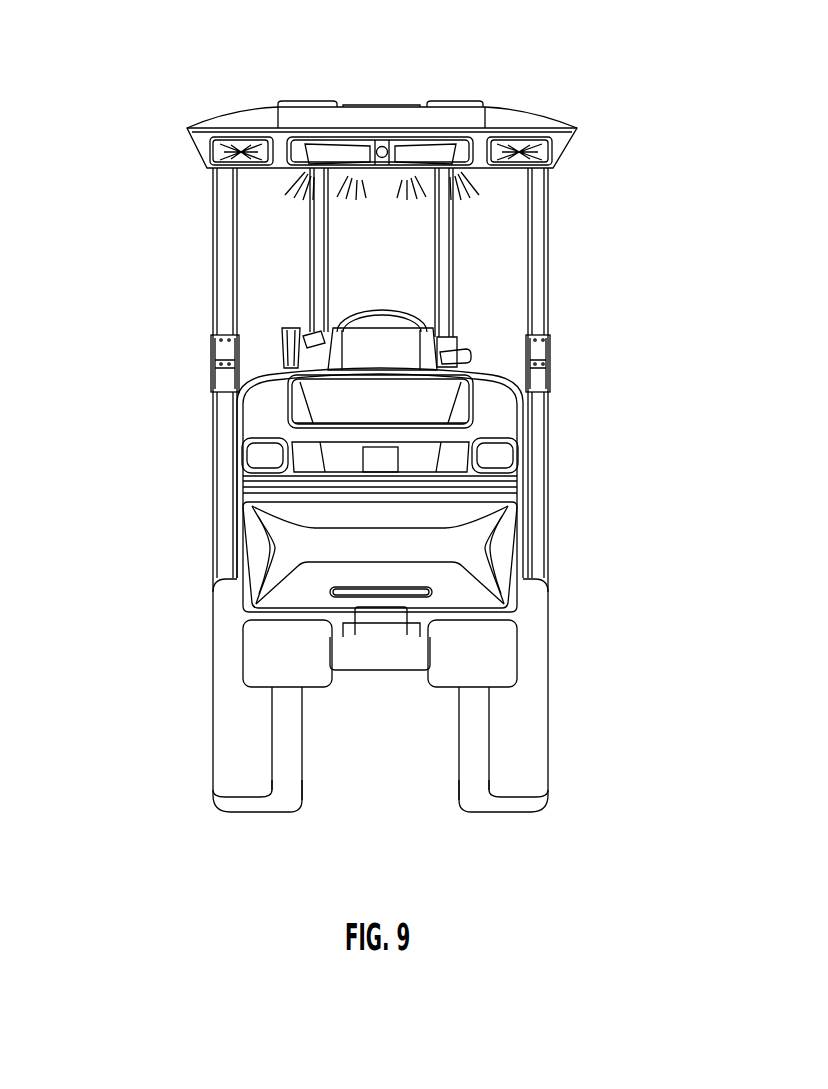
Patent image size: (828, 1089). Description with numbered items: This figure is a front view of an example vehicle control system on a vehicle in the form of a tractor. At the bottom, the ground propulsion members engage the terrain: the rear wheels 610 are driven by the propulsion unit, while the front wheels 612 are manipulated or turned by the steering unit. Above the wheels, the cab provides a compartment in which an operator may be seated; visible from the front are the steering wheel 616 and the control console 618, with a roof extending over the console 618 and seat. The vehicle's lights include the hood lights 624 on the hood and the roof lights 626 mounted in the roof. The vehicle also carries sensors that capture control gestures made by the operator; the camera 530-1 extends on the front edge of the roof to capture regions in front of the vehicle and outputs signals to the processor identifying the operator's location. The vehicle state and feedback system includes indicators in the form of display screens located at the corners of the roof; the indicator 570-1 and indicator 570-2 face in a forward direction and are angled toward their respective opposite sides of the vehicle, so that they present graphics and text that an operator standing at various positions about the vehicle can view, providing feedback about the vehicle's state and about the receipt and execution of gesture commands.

The roof lights 626 is at (438, 162).
The indicator 570-2 is at (213, 151).
The indicator 570-1 is at (545, 152).
The camera 530-1 is at (382, 160).
The steering wheel 616 is at (388, 310).
The control console 618 is at (367, 347).
The hood lights 624 is at (262, 459).
The front wheels 612 is at (213, 743).
The rear wheels 610 is at (302, 768).